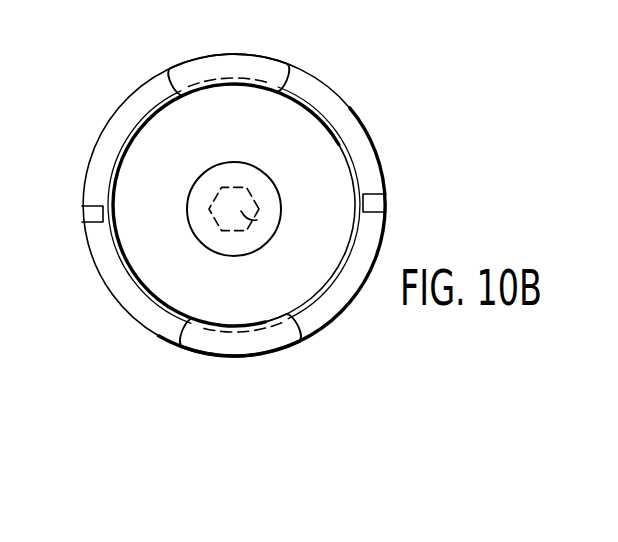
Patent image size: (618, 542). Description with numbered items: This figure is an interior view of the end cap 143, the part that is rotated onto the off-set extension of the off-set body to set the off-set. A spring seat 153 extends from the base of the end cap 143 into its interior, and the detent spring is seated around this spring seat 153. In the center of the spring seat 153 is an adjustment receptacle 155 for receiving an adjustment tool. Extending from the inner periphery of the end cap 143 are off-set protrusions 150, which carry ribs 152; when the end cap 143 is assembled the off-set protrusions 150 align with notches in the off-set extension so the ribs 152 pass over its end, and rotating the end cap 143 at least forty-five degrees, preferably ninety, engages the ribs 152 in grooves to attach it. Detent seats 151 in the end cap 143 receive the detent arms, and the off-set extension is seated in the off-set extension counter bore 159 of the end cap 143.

The end cap 143 is at (398, 143).
The off-set protrusions 150 is at (235, 63).
The detent seats 151 is at (98, 213).
The ribs 152 is at (232, 90).
The spring seat 153 is at (189, 196).
The adjustment receptacle 155 is at (262, 221).
The off-set extension counter bore 159 is at (123, 263).